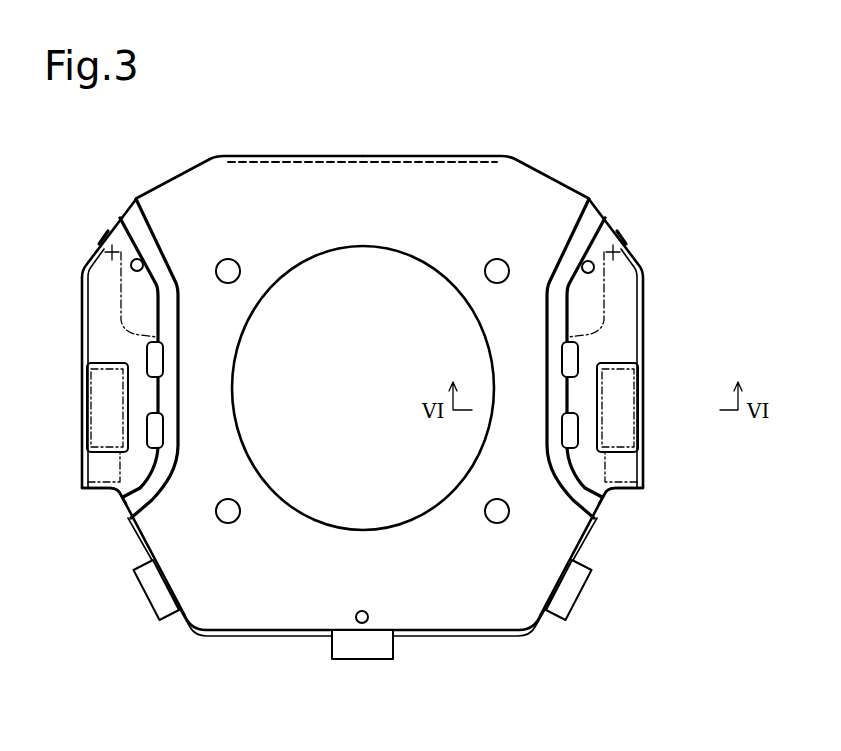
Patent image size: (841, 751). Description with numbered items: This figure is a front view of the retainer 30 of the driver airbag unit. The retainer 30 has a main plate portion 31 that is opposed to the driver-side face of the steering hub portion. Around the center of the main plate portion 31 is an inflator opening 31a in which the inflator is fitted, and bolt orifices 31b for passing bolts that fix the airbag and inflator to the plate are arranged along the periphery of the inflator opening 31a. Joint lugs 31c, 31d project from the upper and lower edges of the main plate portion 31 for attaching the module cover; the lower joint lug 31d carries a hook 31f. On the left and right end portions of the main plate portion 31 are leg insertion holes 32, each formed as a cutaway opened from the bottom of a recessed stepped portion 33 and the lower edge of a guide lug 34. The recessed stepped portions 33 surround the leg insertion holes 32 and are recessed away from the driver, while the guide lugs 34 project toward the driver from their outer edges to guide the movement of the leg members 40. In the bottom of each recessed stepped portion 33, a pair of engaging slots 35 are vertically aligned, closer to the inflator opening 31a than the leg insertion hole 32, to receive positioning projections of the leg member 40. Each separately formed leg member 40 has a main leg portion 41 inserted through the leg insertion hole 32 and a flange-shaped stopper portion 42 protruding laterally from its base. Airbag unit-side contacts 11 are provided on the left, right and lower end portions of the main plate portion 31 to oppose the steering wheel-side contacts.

The retainer 30 is at (578, 148).
The main plate portion 31 is at (453, 585).
The inflator opening 31a is at (360, 247).
The bolt orifice 31b is at (234, 262).
The joint lug 31c is at (381, 163).
The joint lug 31d is at (264, 637).
The hook 31f is at (143, 605).
The leg insertion hole 32 is at (98, 399).
The recessed stepped portion 33 is at (140, 318).
The guide lug 34 is at (82, 336).
The engaging slot 35 is at (160, 430).
The leg member 40 is at (108, 490).
The main leg portion 41 is at (107, 452).
The stopper portion 42 is at (107, 232).
The airbag unit-side contact 11 is at (139, 263).